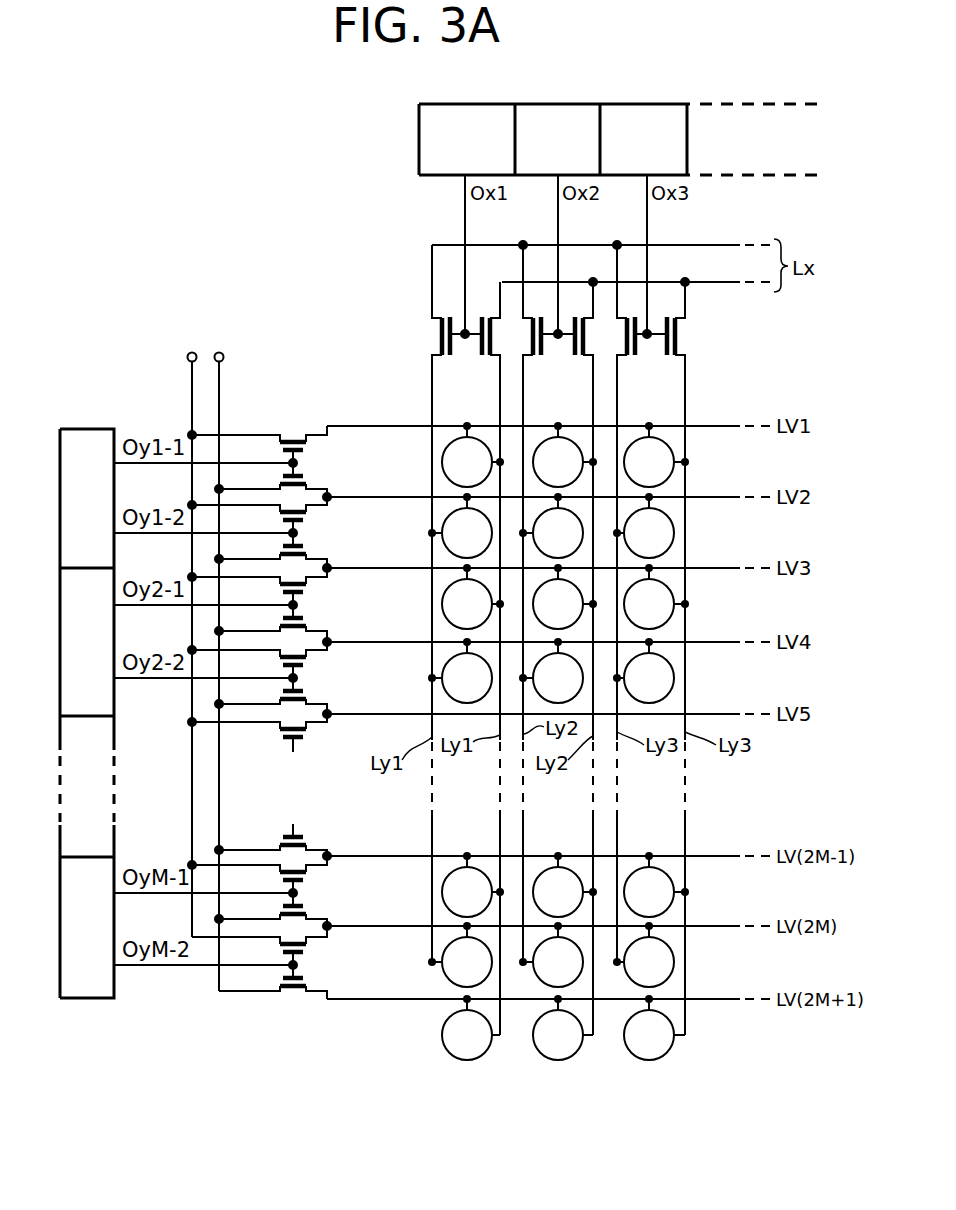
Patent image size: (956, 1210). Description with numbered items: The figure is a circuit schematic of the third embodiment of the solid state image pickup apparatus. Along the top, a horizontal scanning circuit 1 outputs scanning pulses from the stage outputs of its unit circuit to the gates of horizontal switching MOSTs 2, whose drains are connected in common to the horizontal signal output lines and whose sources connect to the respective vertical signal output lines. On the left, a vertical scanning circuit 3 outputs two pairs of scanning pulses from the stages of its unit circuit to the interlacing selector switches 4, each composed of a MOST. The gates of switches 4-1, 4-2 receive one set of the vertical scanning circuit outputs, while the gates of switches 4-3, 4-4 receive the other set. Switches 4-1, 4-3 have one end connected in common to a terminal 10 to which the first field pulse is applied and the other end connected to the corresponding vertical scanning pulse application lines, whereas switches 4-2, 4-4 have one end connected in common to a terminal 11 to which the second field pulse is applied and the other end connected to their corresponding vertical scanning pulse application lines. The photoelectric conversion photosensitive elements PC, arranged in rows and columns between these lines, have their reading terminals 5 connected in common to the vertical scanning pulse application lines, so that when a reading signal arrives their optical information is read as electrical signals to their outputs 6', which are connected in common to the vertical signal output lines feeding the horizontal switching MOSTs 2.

The horizontal scanning circuit 1 is at (419, 144).
The horizontal switching MOST 2 is at (432, 334).
The vertical scanning circuit 3 is at (92, 429).
The interlacing selector switches 4 is at (293, 438).
The interlacing selector switch 4-1 is at (308, 447).
The interlacing selector switch 4-2 is at (308, 477).
The interlacing selector switch 4-3 is at (308, 517).
The interlacing selector switch 4-4 is at (308, 548).
The reading terminal 5 is at (466, 432).
The output 6' is at (561, 759).
The terminal 10 is at (187, 357).
The terminal 11 is at (224, 357).